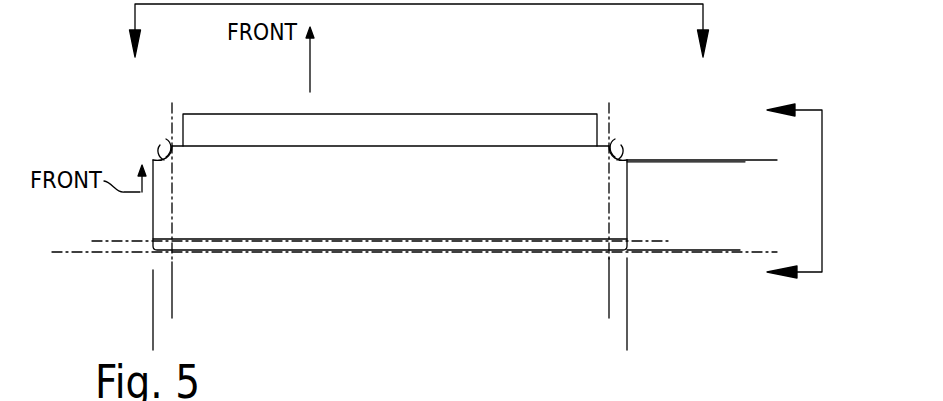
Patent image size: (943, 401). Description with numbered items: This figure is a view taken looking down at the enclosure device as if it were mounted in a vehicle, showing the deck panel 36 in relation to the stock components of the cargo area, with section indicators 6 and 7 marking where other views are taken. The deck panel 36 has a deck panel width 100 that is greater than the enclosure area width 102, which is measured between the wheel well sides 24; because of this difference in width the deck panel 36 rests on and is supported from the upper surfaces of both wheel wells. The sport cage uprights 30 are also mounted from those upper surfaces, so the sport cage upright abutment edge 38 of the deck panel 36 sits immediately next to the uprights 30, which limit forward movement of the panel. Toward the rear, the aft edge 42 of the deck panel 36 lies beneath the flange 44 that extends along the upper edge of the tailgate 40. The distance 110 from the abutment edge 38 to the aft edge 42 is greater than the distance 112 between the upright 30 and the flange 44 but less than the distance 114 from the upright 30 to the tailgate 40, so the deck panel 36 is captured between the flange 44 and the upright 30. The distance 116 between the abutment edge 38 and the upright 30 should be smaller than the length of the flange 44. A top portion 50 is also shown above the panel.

The section line 6- 6 is at (419, 35).
The section line 7- 7 is at (794, 194).
The wheel well sides 24 is at (175, 114).
The sport cage uprights 30 is at (148, 140).
The deck panel 36 is at (383, 203).
The sport cage upright abutment edge 38 is at (160, 156).
The tailgate 40 is at (103, 251).
The aft edge 42 is at (383, 250).
The flange 44 is at (110, 240).
The cover / top portion 50 is at (352, 128).
The deck panel width 100 is at (624, 338).
The enclosure area width 102 is at (606, 306).
The distance from abutment edge to aft edge 110 is at (716, 165).
The distance between upright and flange 112 is at (661, 165).
The distance between upright and tailgate 114 is at (761, 165).
The distance between abutment edge and upright 116 is at (737, 195).